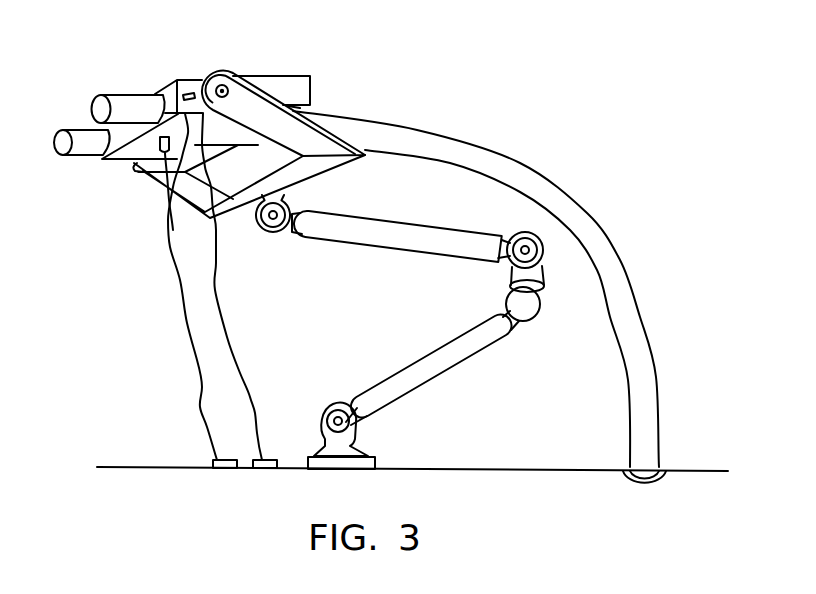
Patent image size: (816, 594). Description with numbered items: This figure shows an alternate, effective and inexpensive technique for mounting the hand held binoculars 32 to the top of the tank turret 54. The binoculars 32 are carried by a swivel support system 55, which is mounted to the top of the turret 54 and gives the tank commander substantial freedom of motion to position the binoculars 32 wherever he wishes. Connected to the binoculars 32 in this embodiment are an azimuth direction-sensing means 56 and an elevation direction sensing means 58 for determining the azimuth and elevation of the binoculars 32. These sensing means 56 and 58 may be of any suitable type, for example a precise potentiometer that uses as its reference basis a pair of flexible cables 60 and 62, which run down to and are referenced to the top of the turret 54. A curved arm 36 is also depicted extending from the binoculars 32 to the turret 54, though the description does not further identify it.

The binoculars 32 is at (172, 74).
The elevation direction sensing means 58 is at (186, 88).
The curved support arm 36 is at (521, 163).
The swivel support system 55 is at (413, 228).
The flexible cable 60 is at (187, 325).
The flexible cable 62 is at (228, 333).
The azimuth direction-sensing means 56 is at (137, 163).
The tank turret 54 is at (123, 468).